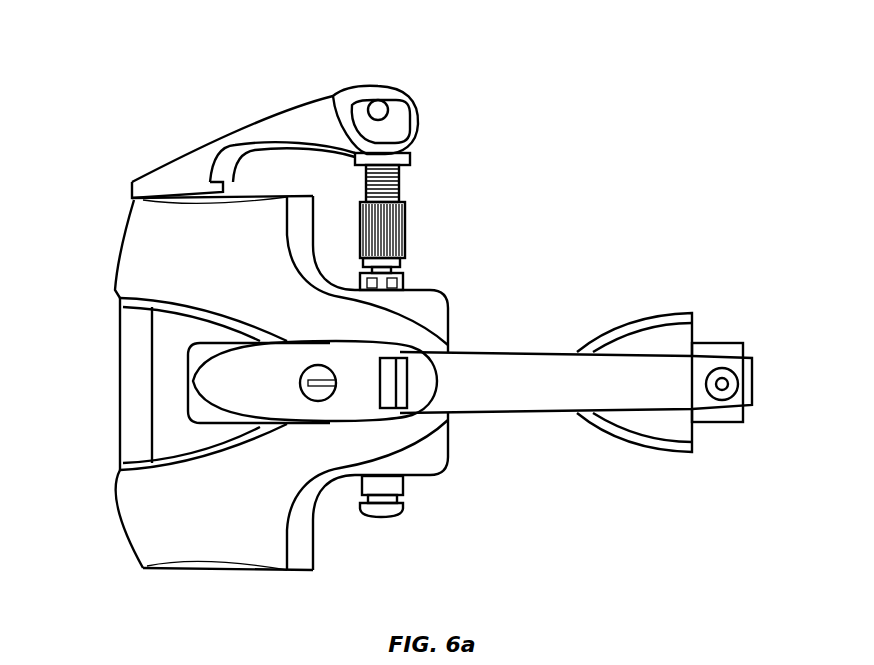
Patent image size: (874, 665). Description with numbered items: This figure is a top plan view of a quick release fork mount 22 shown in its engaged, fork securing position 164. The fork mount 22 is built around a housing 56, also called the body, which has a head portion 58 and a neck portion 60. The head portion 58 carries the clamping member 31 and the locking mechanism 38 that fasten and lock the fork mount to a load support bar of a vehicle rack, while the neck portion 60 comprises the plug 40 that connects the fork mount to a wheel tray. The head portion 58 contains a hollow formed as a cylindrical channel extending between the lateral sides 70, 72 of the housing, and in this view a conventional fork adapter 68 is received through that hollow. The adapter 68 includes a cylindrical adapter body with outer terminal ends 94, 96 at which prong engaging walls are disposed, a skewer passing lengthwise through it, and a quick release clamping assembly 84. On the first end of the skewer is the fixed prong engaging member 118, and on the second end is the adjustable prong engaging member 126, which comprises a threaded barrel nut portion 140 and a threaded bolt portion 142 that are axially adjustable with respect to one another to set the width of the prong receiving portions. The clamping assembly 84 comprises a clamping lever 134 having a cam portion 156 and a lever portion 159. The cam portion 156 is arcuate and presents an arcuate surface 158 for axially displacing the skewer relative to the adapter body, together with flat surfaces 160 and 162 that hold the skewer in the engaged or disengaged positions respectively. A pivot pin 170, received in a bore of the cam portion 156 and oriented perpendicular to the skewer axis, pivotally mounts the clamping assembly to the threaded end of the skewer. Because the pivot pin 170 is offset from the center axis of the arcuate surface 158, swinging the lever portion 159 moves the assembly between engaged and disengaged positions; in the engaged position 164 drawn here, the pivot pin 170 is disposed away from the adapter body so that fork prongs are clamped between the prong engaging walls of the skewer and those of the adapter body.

The fork mount 22 is at (220, 262).
The clamping member 31 is at (222, 380).
The locking mechanism 38 is at (335, 371).
The plug 40 is at (678, 340).
The housing 56 is at (213, 224).
The head portion 58 is at (102, 228).
The neck portion 60 is at (557, 438).
The conventional fork adapter 68 is at (478, 142).
The lateral side 70 is at (418, 477).
The lateral side 72 is at (403, 290).
The quick release clamping assembly 84 is at (246, 112).
The outer terminal end 94 is at (398, 515).
The outer terminal end 96 is at (402, 269).
The fixed prong engaging member 118 is at (382, 518).
The adjustable prong engaging member 126 is at (404, 213).
The clamping lever 134 is at (223, 137).
The threaded barrel nut portion 140 is at (388, 248).
The threaded bolt portion 142 is at (400, 184).
The cam portion 156 is at (418, 87).
The arcuate surface 158 is at (420, 127).
The lever portion 159 is at (142, 162).
The flat surface 160 is at (353, 160).
The flat surface 162 is at (360, 90).
The engaged position 164 is at (222, 103).
The pivot pin 170 is at (381, 103).